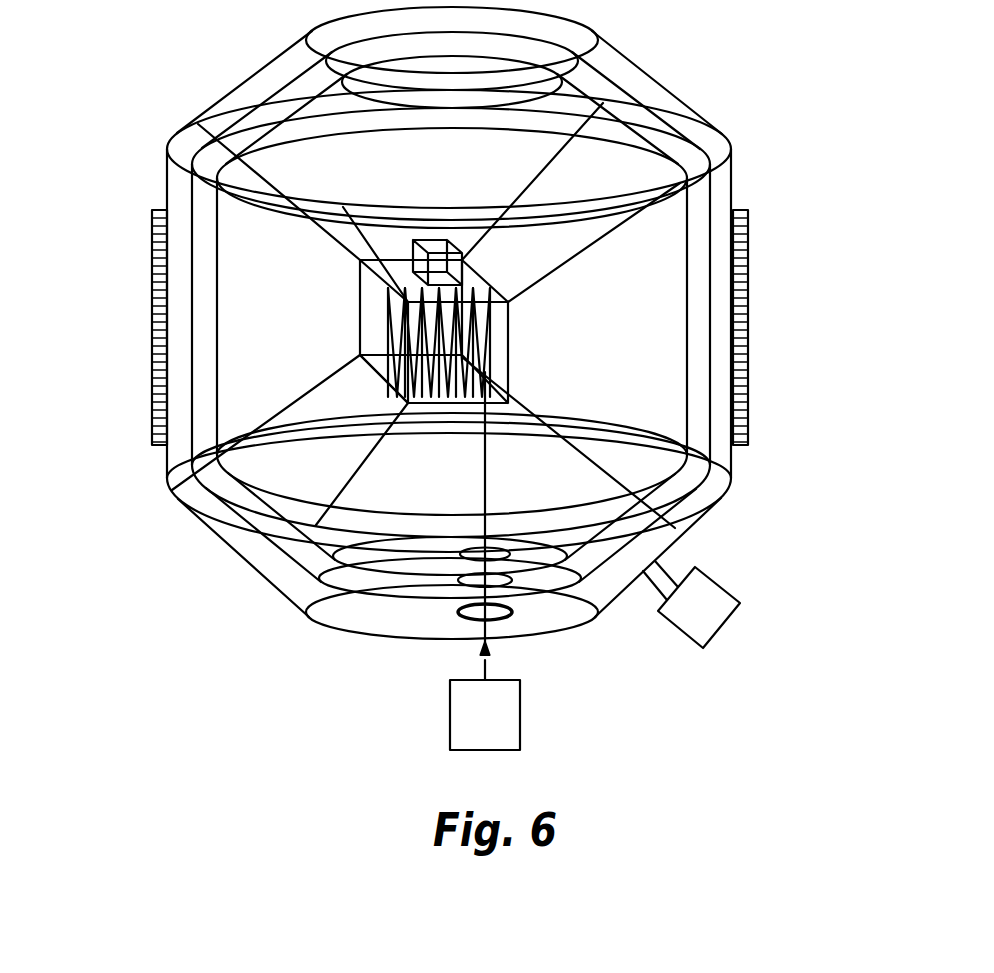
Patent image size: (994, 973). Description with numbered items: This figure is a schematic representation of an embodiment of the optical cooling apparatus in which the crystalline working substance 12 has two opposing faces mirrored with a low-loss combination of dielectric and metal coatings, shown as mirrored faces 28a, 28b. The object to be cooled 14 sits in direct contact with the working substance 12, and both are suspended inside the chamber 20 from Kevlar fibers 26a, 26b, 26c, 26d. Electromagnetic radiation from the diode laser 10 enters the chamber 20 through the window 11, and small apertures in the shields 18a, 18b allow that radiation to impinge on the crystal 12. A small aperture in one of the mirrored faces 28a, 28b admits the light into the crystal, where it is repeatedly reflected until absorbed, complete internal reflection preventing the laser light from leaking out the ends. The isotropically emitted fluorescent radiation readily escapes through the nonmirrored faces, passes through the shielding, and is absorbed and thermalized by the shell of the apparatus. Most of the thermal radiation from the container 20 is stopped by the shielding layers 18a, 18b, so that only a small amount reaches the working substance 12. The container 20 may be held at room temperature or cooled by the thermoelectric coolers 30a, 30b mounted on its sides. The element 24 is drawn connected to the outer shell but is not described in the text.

The diode laser 10 is at (500, 724).
The window 11 is at (446, 630).
The working substance 12 is at (529, 353).
The object to be cooled 14 is at (476, 260).
The shield 18a is at (286, 573).
The shield 18b is at (266, 534).
The chamber 20 is at (150, 470).
The detector 24 is at (716, 619).
The Kevlar fiber 26a is at (268, 409).
The Kevlar fiber 26b is at (330, 486).
The Kevlar fiber 26c is at (470, 452).
The Kevlar fiber 26d is at (550, 440).
The mirrored face 28a is at (382, 388).
The mirrored face 28b is at (385, 259).
The thermoelectric cooler 30a is at (140, 304).
The thermoelectric cooler 30b is at (764, 367).